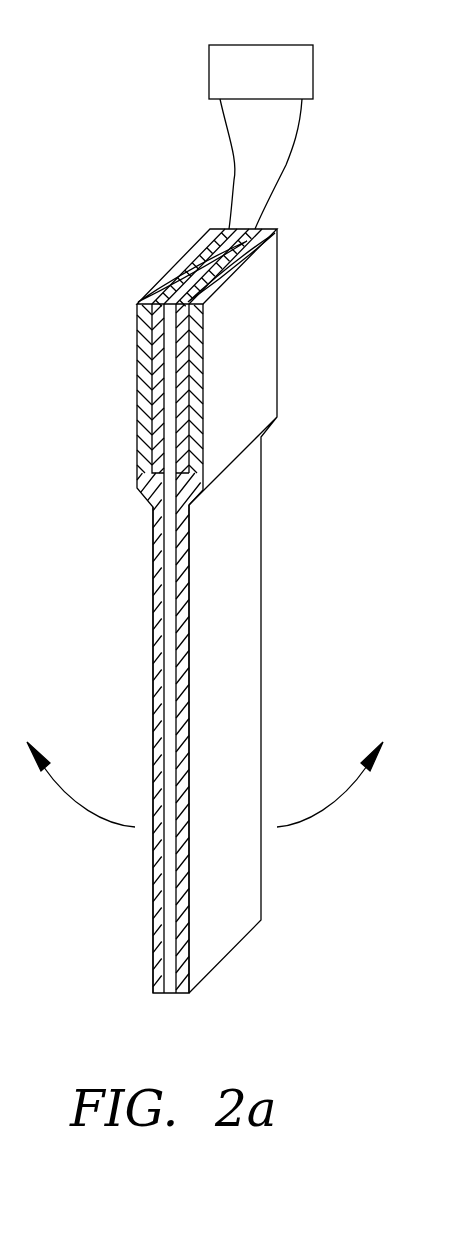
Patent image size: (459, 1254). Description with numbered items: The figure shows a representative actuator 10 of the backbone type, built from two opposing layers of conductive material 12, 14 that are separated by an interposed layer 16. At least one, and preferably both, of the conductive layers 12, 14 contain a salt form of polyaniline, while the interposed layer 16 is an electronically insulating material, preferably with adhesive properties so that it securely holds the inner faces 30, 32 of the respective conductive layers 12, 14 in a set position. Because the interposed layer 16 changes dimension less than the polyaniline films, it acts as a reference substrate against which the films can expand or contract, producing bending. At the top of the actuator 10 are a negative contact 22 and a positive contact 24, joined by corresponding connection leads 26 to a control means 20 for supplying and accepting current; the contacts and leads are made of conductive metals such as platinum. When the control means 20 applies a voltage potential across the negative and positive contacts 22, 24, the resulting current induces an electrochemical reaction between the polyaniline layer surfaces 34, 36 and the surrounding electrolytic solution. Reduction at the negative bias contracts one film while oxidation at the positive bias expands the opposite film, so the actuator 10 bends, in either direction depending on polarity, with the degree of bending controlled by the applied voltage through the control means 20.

The actuator 10 is at (73, 333).
The conductive layer 12 is at (157, 568).
The conductive layer 14 is at (183, 597).
The interposed layer 16 is at (170, 533).
The control means 20 is at (266, 45).
The negative contact 22 is at (200, 256).
The positive contact 24 is at (263, 233).
The connection leads 26 is at (289, 157).
The inner face 30 is at (152, 626).
The inner face 32 is at (190, 650).
The polyaniline layer surface 34 is at (190, 703).
The polyaniline layer surface 36 is at (152, 682).